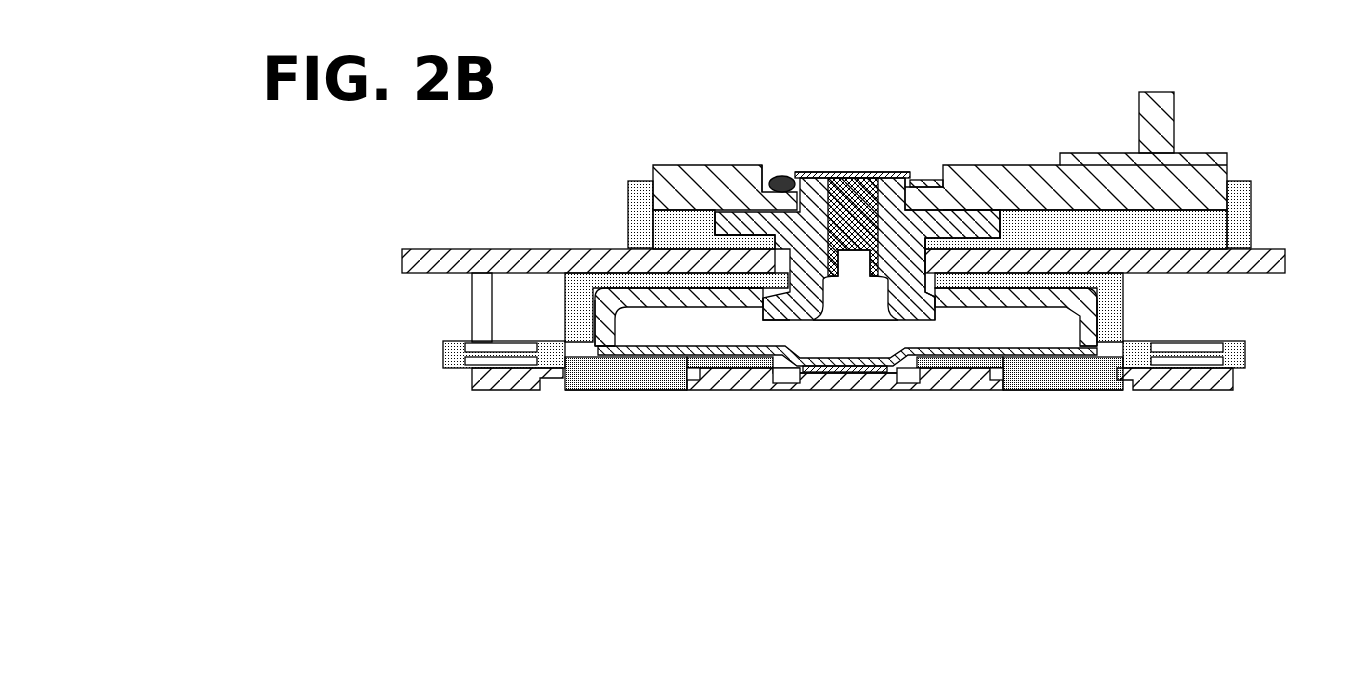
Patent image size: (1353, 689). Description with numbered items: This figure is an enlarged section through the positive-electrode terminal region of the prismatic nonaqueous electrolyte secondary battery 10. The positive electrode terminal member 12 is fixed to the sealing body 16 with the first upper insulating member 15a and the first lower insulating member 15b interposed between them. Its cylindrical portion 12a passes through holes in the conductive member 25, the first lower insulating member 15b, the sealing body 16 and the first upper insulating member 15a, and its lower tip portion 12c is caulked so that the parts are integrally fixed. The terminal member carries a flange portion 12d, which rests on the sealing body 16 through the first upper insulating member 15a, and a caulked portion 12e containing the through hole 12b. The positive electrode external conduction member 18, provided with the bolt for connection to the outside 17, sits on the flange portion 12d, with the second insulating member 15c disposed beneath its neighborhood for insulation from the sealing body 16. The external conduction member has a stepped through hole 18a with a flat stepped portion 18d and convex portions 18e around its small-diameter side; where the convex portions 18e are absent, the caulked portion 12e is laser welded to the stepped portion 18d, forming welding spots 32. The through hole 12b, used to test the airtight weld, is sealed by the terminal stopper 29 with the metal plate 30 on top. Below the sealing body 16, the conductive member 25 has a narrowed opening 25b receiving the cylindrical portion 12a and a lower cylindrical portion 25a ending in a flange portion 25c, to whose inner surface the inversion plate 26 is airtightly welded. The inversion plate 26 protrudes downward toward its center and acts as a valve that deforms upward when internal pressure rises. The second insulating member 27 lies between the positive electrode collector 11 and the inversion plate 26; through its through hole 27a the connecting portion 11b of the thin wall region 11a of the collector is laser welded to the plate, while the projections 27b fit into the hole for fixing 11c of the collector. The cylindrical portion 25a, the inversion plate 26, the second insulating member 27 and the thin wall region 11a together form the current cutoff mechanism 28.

The prismatic nonaqueous electrolyte secondary battery 10 is at (488, 122).
The positive electrode collector 11 is at (957, 384).
The thin wall region 11a is at (903, 373).
The connecting portion 11b is at (867, 373).
The hole for fixing 11c is at (682, 377).
The positive electrode terminal member 12 is at (820, 190).
The cylindrical portion 12a is at (907, 294).
The through hole 12b is at (824, 232).
The tip portion 12c is at (772, 313).
The flange portion 12d is at (955, 213).
The caulked portion 12e is at (925, 179).
The first upper insulating member 15a is at (703, 242).
The first lower insulating member 15b is at (567, 285).
The second insulating member 15c is at (645, 183).
The sealing body 16 is at (478, 250).
The bolt for connection to the outside 17 is at (1168, 108).
The positive electrode external conduction member 18 is at (735, 168).
The stepped through hole 18a is at (885, 170).
The stepped portion 18d is at (765, 188).
The convex portions 18e is at (933, 182).
The conductive member 25 is at (597, 300).
The cylindrical portion 25a is at (597, 322).
The opening 25b is at (750, 297).
The flange portion 25c is at (582, 355).
The inversion plate 26 is at (827, 365).
The second insulating member 27 is at (1105, 364).
The through hole 27a is at (790, 363).
The projections 27b is at (600, 376).
The current cutoff mechanism 28 is at (847, 376).
The terminal stopper 29 is at (853, 190).
The metal plate 30 is at (838, 172).
The welding spots 32 is at (785, 178).